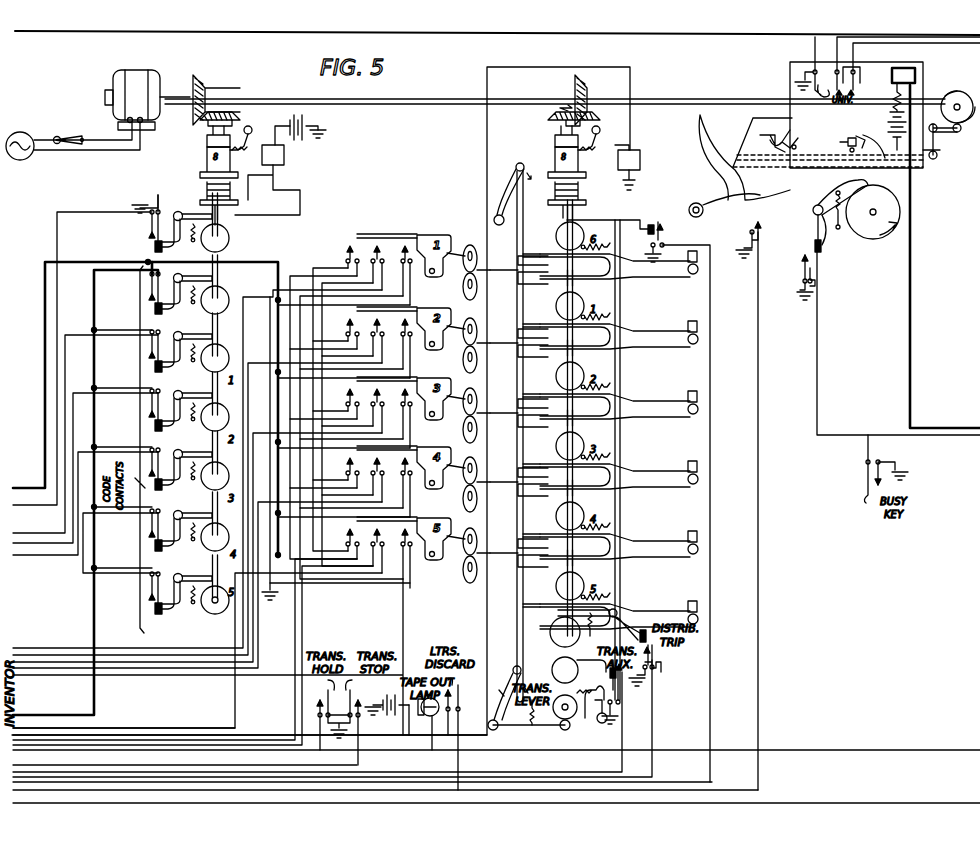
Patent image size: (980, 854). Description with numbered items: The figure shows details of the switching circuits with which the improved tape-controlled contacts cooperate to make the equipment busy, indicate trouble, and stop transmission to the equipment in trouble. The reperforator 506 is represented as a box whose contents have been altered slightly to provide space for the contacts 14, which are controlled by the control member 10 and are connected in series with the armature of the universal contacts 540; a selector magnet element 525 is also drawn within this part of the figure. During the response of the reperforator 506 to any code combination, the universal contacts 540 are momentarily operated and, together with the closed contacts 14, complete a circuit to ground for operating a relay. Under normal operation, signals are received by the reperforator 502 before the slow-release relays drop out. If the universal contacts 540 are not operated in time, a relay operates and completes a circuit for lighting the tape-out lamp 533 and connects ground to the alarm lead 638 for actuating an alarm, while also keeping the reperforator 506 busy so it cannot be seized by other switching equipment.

The universal contacts 540 is at (852, 70).
The selector (SEL) magnet 525 is at (915, 75).
The reperforator 506 is at (918, 168).
The reperforator 502 is at (860, 238).
The control member 10 is at (818, 127).
The contacts 14 is at (850, 138).
The tape-out lamp 533 is at (430, 716).
The alarm lead 638 is at (844, 790).